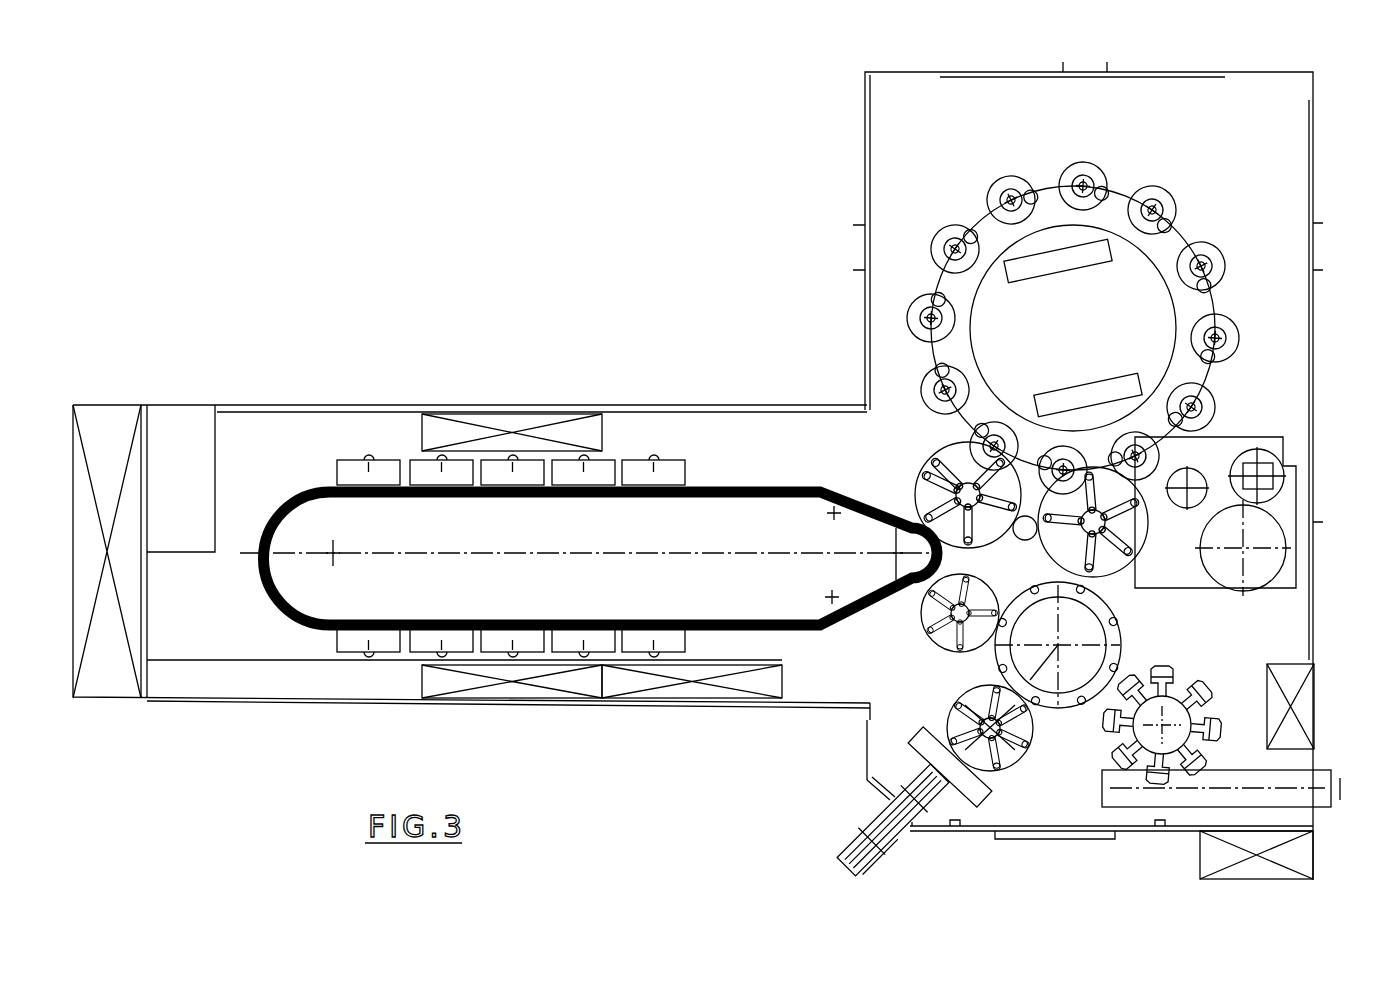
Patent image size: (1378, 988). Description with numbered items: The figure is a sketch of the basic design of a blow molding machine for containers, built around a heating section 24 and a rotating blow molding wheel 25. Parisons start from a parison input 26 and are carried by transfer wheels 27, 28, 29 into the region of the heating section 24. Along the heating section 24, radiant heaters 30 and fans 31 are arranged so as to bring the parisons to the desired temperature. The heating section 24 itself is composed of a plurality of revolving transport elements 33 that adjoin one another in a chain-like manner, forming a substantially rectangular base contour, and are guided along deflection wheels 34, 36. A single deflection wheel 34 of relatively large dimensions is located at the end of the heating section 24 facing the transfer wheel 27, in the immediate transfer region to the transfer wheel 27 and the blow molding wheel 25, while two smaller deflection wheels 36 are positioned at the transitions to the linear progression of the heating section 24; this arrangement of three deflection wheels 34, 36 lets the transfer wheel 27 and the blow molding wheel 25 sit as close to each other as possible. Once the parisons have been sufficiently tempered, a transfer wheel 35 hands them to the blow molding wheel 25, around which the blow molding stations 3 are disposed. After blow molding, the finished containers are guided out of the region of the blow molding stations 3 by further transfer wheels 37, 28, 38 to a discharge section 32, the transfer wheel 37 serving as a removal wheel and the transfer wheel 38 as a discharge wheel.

The blow molding station 3 is at (925, 312).
The heating section 24 is at (645, 442).
The blow molding wheel 25 is at (1005, 250).
The parison input 26 is at (895, 840).
The transfer wheel 27 is at (1000, 772).
The transfer wheel 28 is at (1058, 710).
The transfer wheel 29 is at (938, 652).
The radiant heater 30 is at (385, 458).
The fan 31 is at (505, 417).
The discharge section 32 is at (1320, 802).
The revolving transport element 33 is at (305, 618).
The deflection wheel 34 is at (337, 553).
The transfer wheel 35 is at (950, 453).
The deflection wheel 36 is at (834, 513).
The transfer wheel 37 is at (1143, 548).
The transfer wheel 38 is at (1170, 740).